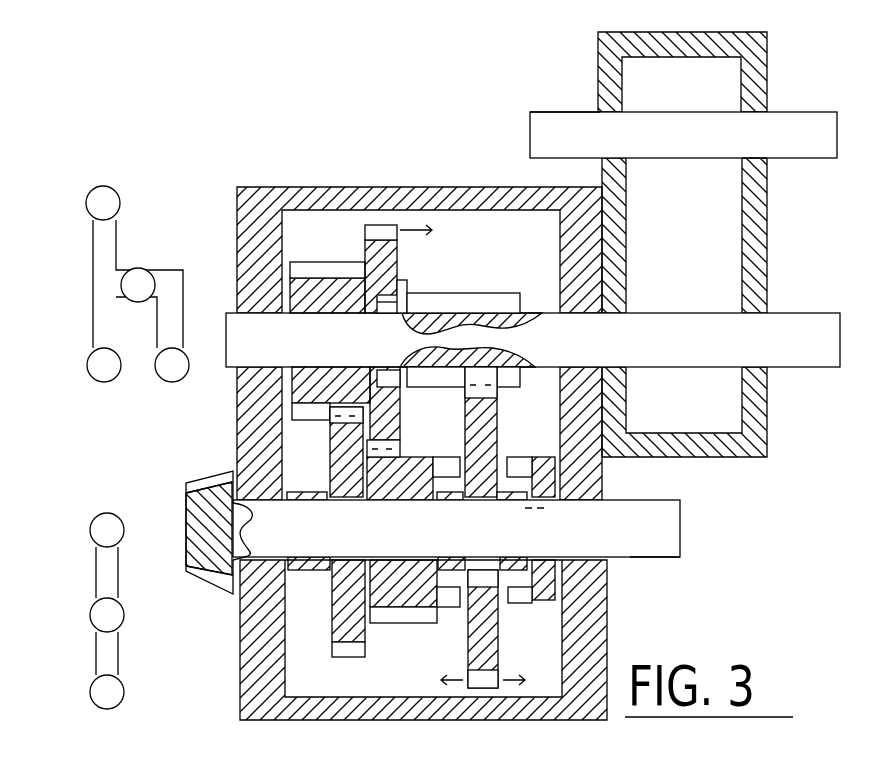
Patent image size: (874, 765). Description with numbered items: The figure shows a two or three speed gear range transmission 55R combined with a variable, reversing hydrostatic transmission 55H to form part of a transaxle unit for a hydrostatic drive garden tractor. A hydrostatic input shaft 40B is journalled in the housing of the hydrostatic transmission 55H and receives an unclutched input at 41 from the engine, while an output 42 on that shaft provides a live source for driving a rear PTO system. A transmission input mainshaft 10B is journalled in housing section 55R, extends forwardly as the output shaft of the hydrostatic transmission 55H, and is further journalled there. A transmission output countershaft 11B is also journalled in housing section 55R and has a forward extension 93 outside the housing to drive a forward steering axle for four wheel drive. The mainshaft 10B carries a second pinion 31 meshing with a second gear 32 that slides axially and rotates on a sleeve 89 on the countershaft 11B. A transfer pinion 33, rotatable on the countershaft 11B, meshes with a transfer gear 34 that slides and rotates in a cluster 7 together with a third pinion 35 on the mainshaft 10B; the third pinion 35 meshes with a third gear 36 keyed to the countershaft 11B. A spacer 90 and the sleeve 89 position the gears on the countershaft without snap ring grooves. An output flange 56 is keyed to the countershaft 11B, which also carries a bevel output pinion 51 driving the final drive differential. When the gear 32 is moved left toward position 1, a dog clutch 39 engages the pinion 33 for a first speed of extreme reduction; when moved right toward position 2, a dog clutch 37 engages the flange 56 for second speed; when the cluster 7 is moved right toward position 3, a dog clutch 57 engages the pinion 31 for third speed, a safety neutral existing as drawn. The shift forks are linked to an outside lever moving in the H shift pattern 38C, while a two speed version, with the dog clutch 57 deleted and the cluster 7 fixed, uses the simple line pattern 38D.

The gear range transmission 55R is at (458, 188).
The hydrostatic transmission 55H is at (722, 180).
The unclutched input 41 is at (797, 124).
The output 42 is at (548, 126).
The hydrostatic input shaft 40B is at (752, 162).
The transmission input mainshaft 10B is at (243, 348).
The third pinion 35 is at (303, 268).
The cluster 7 is at (360, 288).
The transfer gear 34 is at (371, 225).
The dog clutch 57 is at (407, 296).
The second pinion 31 is at (510, 293).
The third speed position 3 is at (427, 232).
The second gear 32 is at (498, 645).
The spacer 90 is at (308, 505).
The third gear 36 is at (348, 657).
The transfer pinion 33 is at (380, 623).
The dog clutch 39 is at (447, 466).
The dog clutch 37 is at (515, 466).
The output flange 56 is at (538, 600).
The transmission output countershaft 11B is at (680, 518).
The sleeve 89 is at (495, 505).
The forward extension 93 is at (652, 552).
The bevel output pinion 51 is at (200, 590).
The first speed position 1 is at (441, 682).
The second speed position 2 is at (524, 682).
The H shift pattern 38C is at (99, 284).
The simple line pattern 38D is at (71, 611).